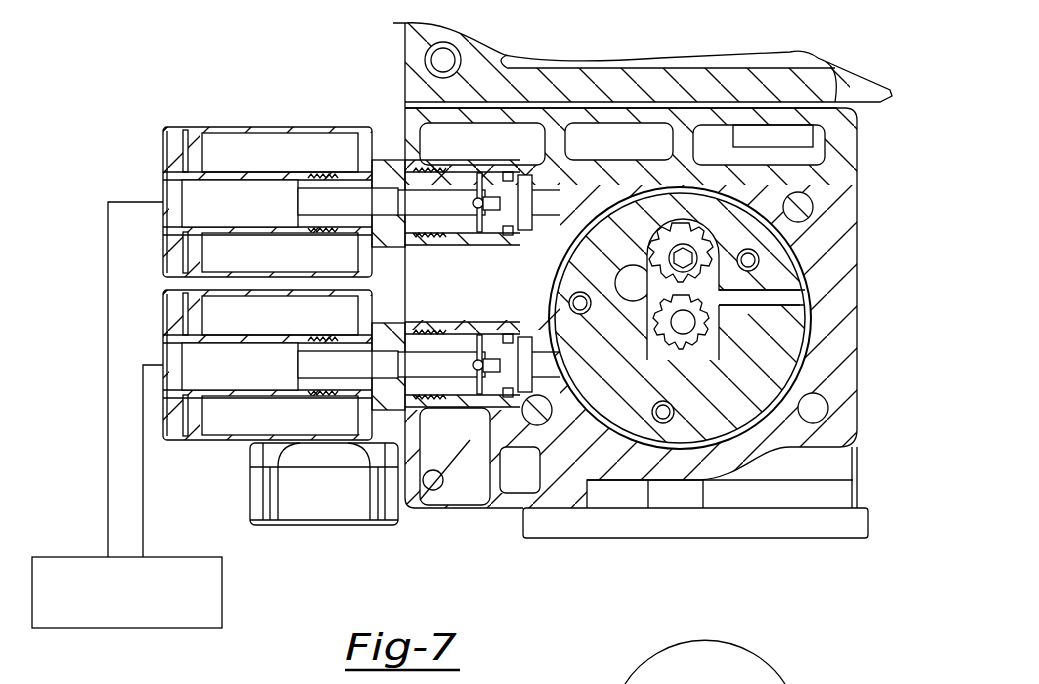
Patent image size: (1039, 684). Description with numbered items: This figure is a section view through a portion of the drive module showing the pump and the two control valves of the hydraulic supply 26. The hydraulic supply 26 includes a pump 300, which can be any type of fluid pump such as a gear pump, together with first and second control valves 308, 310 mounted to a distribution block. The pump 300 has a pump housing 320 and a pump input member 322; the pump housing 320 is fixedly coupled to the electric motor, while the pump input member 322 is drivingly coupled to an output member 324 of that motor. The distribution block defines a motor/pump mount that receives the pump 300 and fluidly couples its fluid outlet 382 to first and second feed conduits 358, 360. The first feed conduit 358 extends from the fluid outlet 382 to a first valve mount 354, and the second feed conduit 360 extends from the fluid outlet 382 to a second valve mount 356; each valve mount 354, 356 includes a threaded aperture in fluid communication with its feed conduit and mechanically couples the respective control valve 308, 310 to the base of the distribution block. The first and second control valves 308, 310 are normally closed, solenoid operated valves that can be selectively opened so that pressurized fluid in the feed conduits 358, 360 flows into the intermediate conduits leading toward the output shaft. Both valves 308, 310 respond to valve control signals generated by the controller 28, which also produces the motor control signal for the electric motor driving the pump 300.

The hydraulic supply 26 is at (398, 61).
The controller 28 is at (92, 557).
The pump 300 is at (738, 234).
The first control valve 308 is at (172, 305).
The second control valve 310 is at (181, 152).
The pump housing 320 is at (767, 367).
The pump input member 322 is at (713, 322).
The output member 324 is at (700, 333).
The first valve mount 354 is at (470, 403).
The second valve mount 356 is at (445, 165).
The first feed conduit 358 is at (536, 370).
The second feed conduit 360 is at (577, 197).
The fluid outlet 382 is at (782, 300).